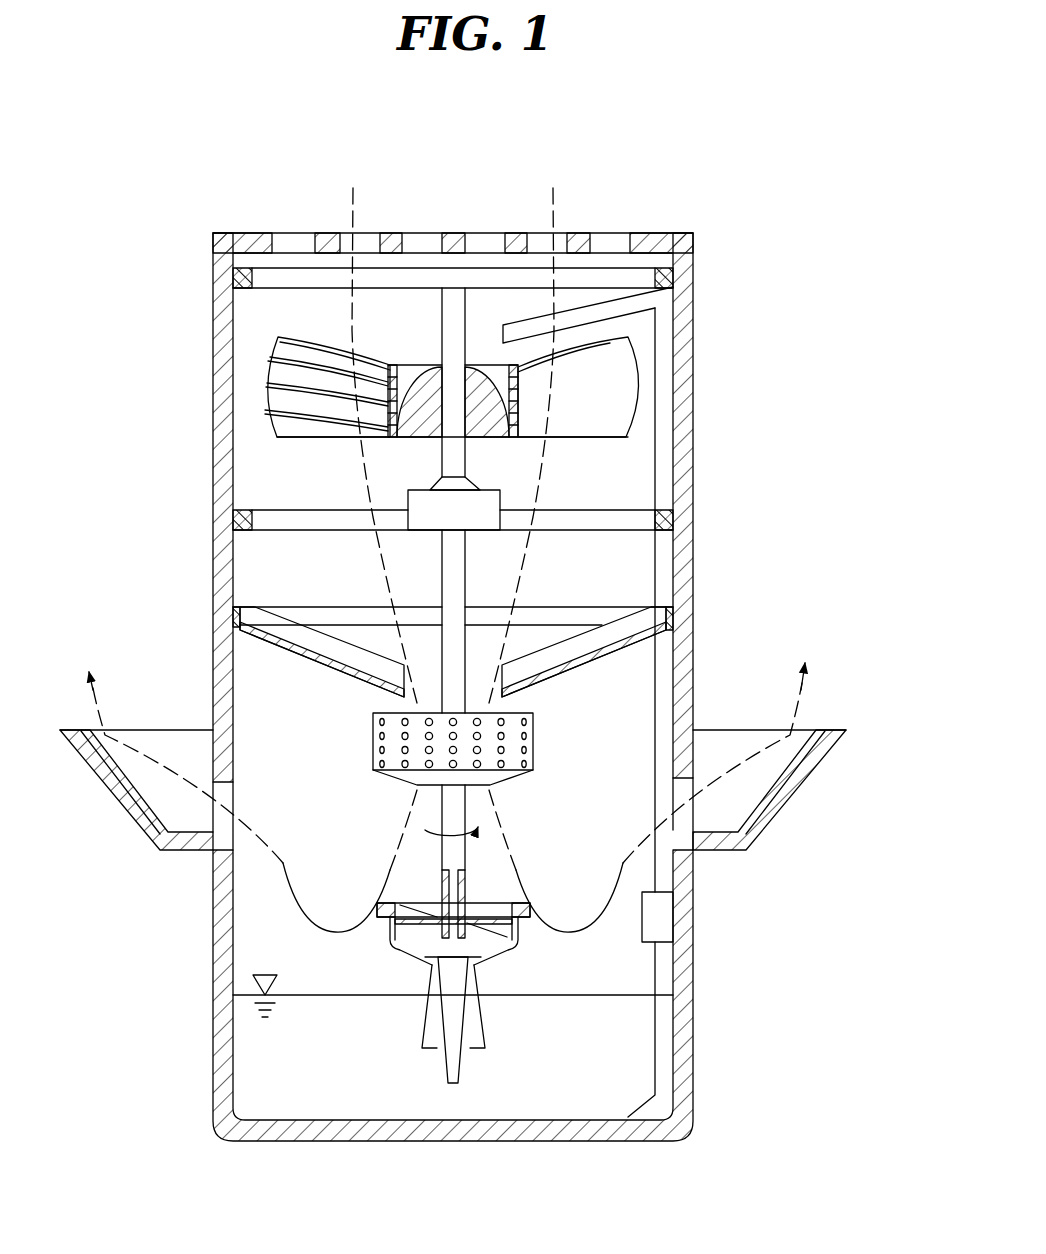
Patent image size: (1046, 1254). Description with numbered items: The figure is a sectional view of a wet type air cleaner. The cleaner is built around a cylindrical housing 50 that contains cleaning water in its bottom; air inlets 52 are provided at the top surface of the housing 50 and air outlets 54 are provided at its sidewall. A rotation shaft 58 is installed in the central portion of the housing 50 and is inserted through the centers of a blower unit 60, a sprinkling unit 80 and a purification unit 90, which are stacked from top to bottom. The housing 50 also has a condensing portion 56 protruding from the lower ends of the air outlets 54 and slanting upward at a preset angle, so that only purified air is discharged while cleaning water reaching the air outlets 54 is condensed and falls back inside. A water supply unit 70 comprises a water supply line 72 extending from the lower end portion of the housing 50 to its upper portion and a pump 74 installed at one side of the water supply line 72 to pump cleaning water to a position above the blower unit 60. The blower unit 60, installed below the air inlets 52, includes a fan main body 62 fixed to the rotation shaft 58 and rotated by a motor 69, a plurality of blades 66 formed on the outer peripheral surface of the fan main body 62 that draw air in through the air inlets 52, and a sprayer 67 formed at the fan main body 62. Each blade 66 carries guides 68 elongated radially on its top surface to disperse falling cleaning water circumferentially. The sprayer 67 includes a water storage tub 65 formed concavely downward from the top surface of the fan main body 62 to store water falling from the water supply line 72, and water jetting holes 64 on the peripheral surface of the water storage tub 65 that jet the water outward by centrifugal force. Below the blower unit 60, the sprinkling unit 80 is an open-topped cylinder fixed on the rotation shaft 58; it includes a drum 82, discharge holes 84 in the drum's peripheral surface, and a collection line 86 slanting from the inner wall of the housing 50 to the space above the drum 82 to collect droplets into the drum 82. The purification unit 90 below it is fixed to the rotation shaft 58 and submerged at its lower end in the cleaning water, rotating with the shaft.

The housing 50 is at (675, 575).
The air inlets 52 is at (619, 248).
The air outlets 54 is at (695, 788).
The condensing portion 56 is at (780, 812).
The rotation shaft 58 is at (458, 556).
The blower unit 60 is at (359, 342).
The fan main body 62 is at (410, 438).
The water jetting holes 64 is at (300, 438).
The water storage tub 65 is at (410, 398).
The blades 66 is at (262, 387).
The sprayer 67 is at (359, 394).
The guides 68 is at (263, 358).
The motor 69 is at (483, 510).
The water supply unit 70 is at (735, 712).
The water supply line 72 is at (663, 973).
The pump 74 is at (673, 918).
The sprinkling unit 80 is at (380, 696).
The drum 82 is at (373, 740).
The discharge holes 84 is at (405, 782).
The collection line 86 is at (253, 640).
The purification unit 90 is at (350, 911).